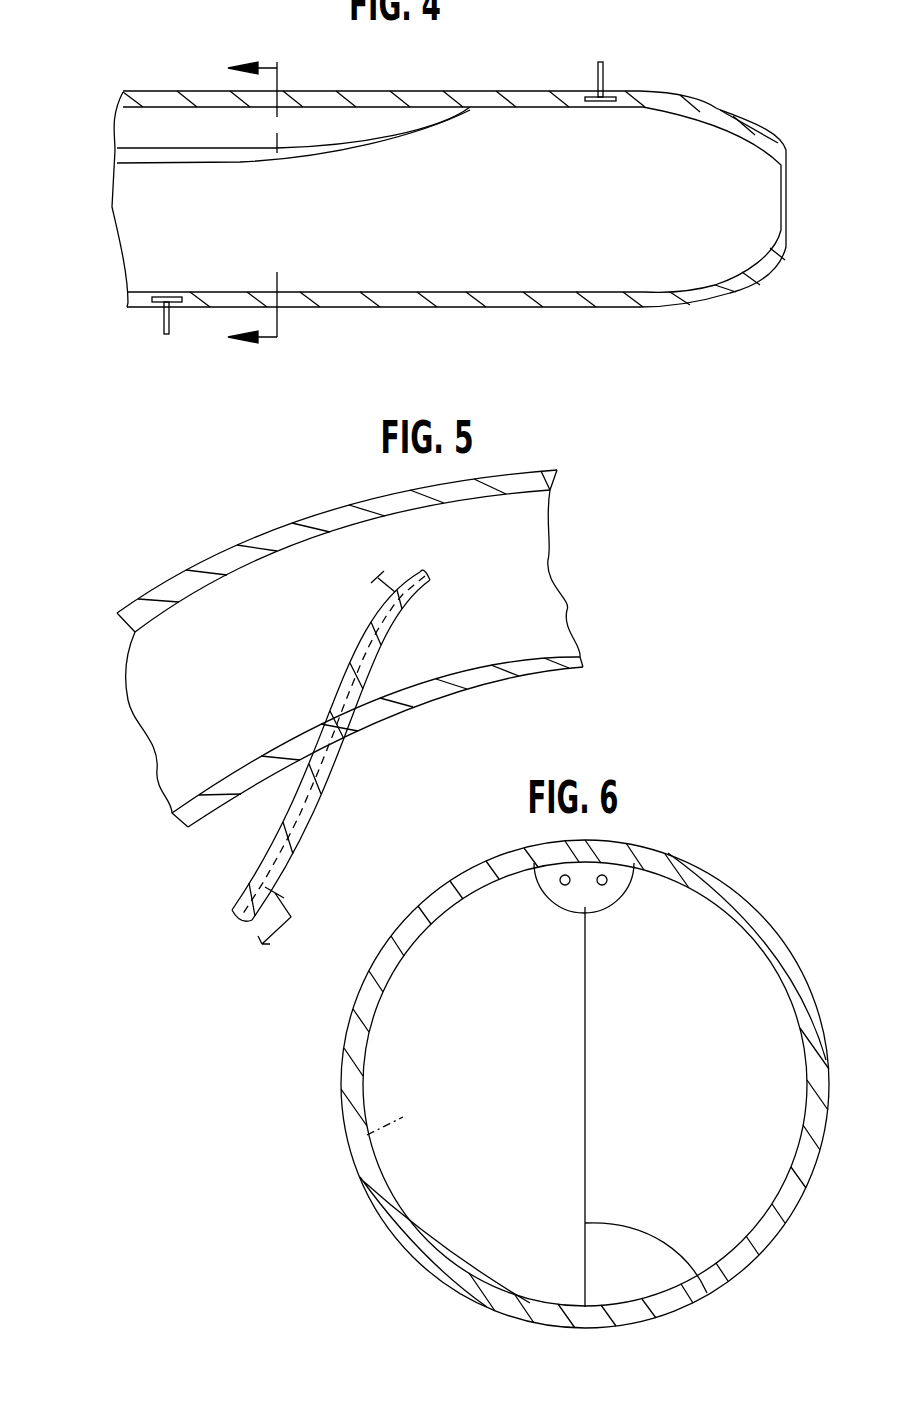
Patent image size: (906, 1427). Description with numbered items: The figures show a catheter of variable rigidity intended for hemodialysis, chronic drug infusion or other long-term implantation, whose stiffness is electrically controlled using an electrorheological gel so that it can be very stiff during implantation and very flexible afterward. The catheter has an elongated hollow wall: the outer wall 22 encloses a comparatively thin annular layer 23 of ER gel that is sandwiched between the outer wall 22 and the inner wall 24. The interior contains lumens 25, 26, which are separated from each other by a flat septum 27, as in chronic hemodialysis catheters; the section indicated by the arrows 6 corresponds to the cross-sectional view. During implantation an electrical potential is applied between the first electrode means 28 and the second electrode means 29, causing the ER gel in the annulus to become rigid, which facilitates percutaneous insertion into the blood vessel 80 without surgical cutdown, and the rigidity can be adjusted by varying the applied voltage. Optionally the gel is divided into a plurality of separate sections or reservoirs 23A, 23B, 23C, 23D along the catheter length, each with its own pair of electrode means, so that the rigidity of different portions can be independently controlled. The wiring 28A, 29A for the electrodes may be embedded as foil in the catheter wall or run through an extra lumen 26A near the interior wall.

In FIG. 4, the section line 6- 6 is at (276, 199).
In FIG. 4, the outer wall 22 is at (337, 90).
In FIG. 6, the outer wall 22 is at (787, 1222).
In FIG. 4, the annular layer of ER gel 23 is at (143, 99).
In FIG. 6, the annular layer of ER gel 23 is at (342, 1062).
In FIG. 5, the reservoir of ER gel 23A is at (297, 817).
In FIG. 5, the reservoir of ER gel 23B is at (337, 767).
In FIG. 5, the wall layer strip portion 23C is at (365, 660).
In FIG. 5, the wall layer band 23D is at (372, 652).
In FIG. 4, the inner wall 24 is at (168, 108).
In FIG. 6, the inner wall 24 is at (395, 1170).
In FIG. 4, the lumen 25 is at (377, 122).
In FIG. 6, the lumen 25 is at (757, 990).
In FIG. 4, the lumen 26 is at (373, 262).
In FIG. 6, the lumen 26 is at (367, 1135).
In FIG. 6, the extra lumen 26A is at (585, 872).
In FIG. 4, the flat septum 27 is at (168, 163).
In FIG. 5, the flat septum 27 is at (260, 879).
In FIG. 6, the flat septum 27 is at (707, 1293).
In FIG. 4, the first electrode means 28 is at (604, 78).
In FIG. 5, the first electrode means 28 is at (273, 925).
In FIG. 6, the wiring 28A is at (564, 874).
In FIG. 4, the second electrode means 29 is at (156, 320).
In FIG. 5, the second electrode means 29 is at (380, 575).
In FIG. 6, the wiring 29A is at (607, 877).
In FIG. 5, the blood vessel 80 is at (235, 558).